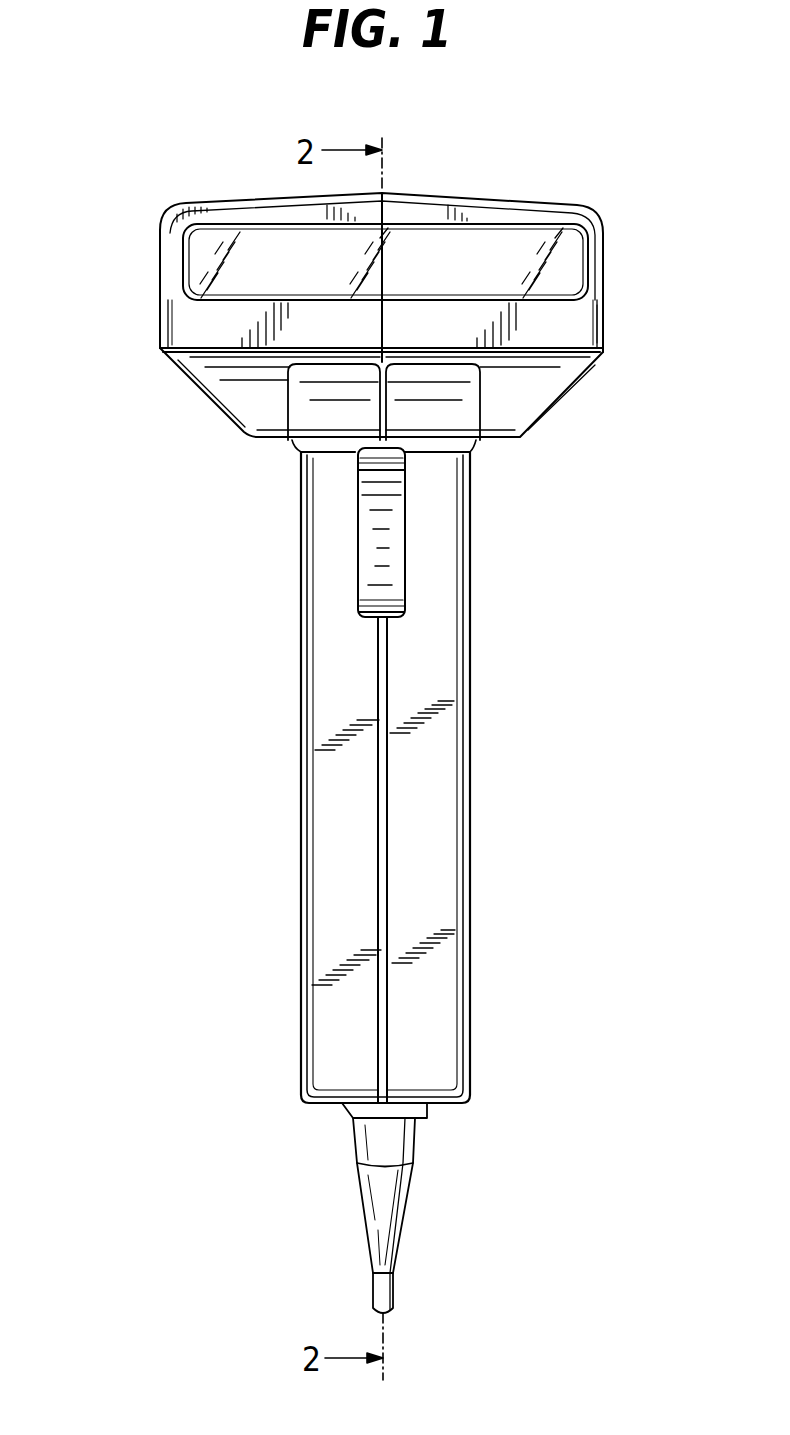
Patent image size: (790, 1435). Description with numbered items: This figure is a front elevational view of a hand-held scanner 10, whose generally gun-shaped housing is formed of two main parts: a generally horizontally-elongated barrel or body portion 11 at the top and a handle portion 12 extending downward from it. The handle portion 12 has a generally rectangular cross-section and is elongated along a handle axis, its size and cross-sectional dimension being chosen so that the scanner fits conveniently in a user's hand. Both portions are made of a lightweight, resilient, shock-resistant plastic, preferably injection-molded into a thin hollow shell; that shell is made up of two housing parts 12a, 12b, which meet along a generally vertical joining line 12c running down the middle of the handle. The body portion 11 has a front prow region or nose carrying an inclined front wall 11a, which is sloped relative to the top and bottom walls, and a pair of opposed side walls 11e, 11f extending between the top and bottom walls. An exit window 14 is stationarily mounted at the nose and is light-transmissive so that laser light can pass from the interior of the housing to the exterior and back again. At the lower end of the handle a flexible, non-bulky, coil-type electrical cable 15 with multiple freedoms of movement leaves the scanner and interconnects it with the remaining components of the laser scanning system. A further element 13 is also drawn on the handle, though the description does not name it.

The scanner 10 is at (98, 450).
The body portion 11 is at (627, 372).
The inclined front wall 11a is at (547, 410).
The side wall 11e is at (604, 318).
The side wall 11f is at (161, 322).
The handle portion 12 is at (469, 831).
The housing part 12a is at (447, 907).
The housing part 12b is at (323, 912).
The joining line 12c is at (382, 1030).
The plunger cap 13 is at (383, 547).
The exit window 14 is at (575, 250).
The electrical cable 15 is at (407, 1222).